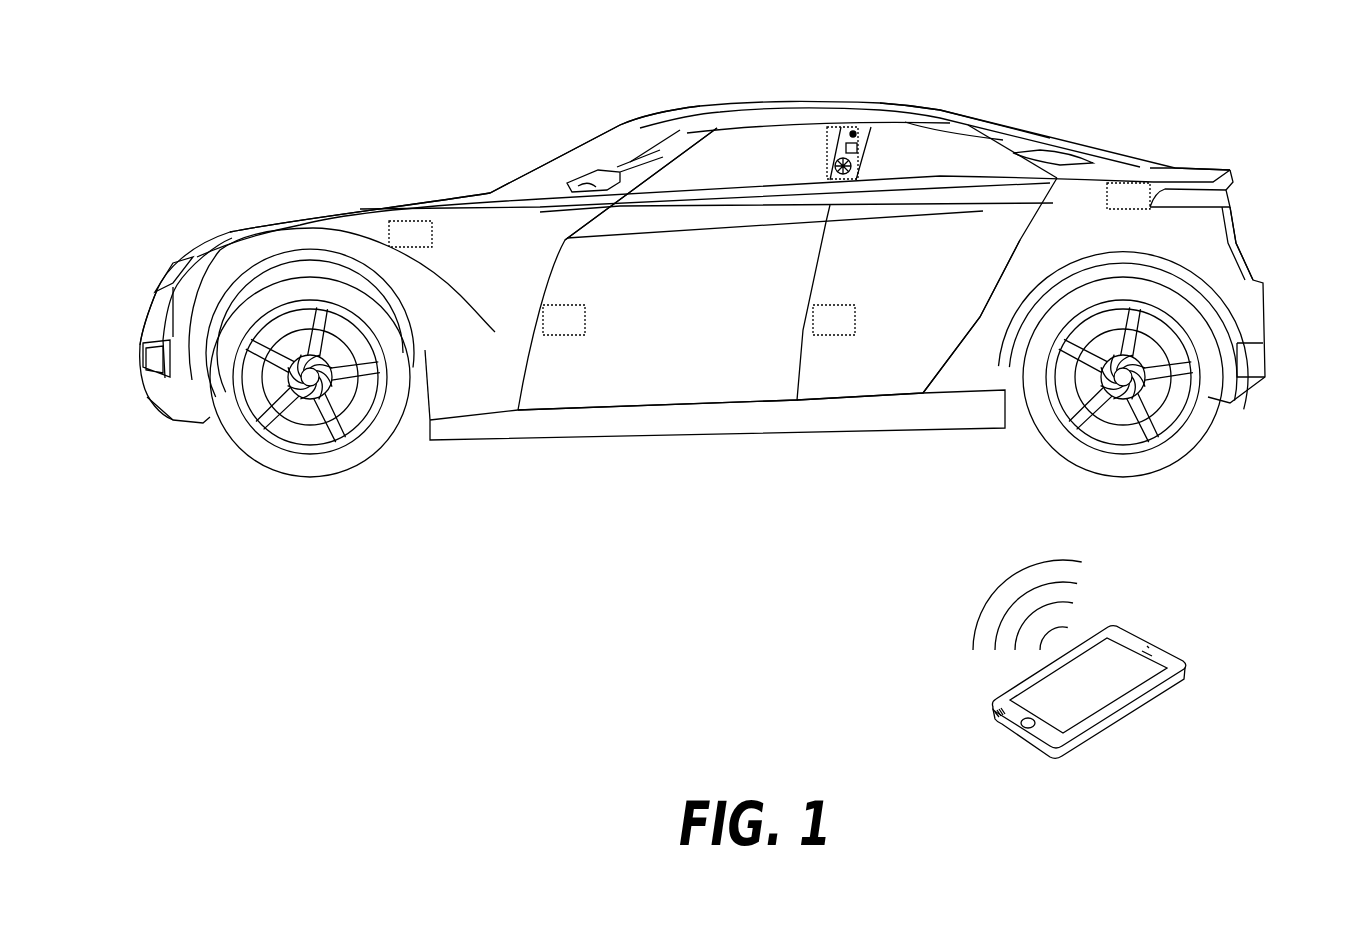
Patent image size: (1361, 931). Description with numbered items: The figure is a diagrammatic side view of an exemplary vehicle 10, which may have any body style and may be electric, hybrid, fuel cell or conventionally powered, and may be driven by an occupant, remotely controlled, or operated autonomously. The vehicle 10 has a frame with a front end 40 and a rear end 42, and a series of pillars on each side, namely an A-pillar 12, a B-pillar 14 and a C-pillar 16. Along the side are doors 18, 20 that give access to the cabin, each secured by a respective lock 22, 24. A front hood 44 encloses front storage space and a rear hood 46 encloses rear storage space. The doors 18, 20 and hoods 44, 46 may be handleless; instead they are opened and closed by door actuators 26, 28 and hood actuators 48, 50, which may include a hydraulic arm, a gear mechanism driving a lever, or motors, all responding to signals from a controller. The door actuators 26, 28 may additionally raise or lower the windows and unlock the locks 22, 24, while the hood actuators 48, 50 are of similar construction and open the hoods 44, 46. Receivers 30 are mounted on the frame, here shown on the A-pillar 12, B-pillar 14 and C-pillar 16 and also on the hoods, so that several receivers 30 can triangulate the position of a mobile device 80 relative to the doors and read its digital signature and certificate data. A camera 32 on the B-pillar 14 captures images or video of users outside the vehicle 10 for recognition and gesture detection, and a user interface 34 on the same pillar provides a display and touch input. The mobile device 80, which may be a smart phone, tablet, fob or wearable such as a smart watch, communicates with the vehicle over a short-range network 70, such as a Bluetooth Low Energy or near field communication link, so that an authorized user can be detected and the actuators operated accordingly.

The vehicle 10 is at (702, 289).
The A-pillar 12 is at (668, 128).
The B-pillar 14 is at (864, 117).
The C-pillar 16 is at (1003, 140).
The door 18 is at (674, 307).
The door 20 is at (927, 289).
The lock 22 is at (790, 230).
The lock 24 is at (1030, 211).
The door actuator 26 is at (564, 320).
The door actuator 28 is at (834, 320).
The receiver 30 is at (673, 150).
The camera 32 is at (871, 126).
The user interface 34 is at (838, 170).
The front end 40 is at (213, 185).
The rear end 42 is at (1265, 133).
The front hood 44 is at (367, 206).
The rear hood 46 is at (1192, 168).
The hood actuator 48 is at (410, 234).
The hood actuator 50 is at (1128, 196).
The short-range network 70 is at (937, 612).
The mobile device 80 is at (1128, 723).